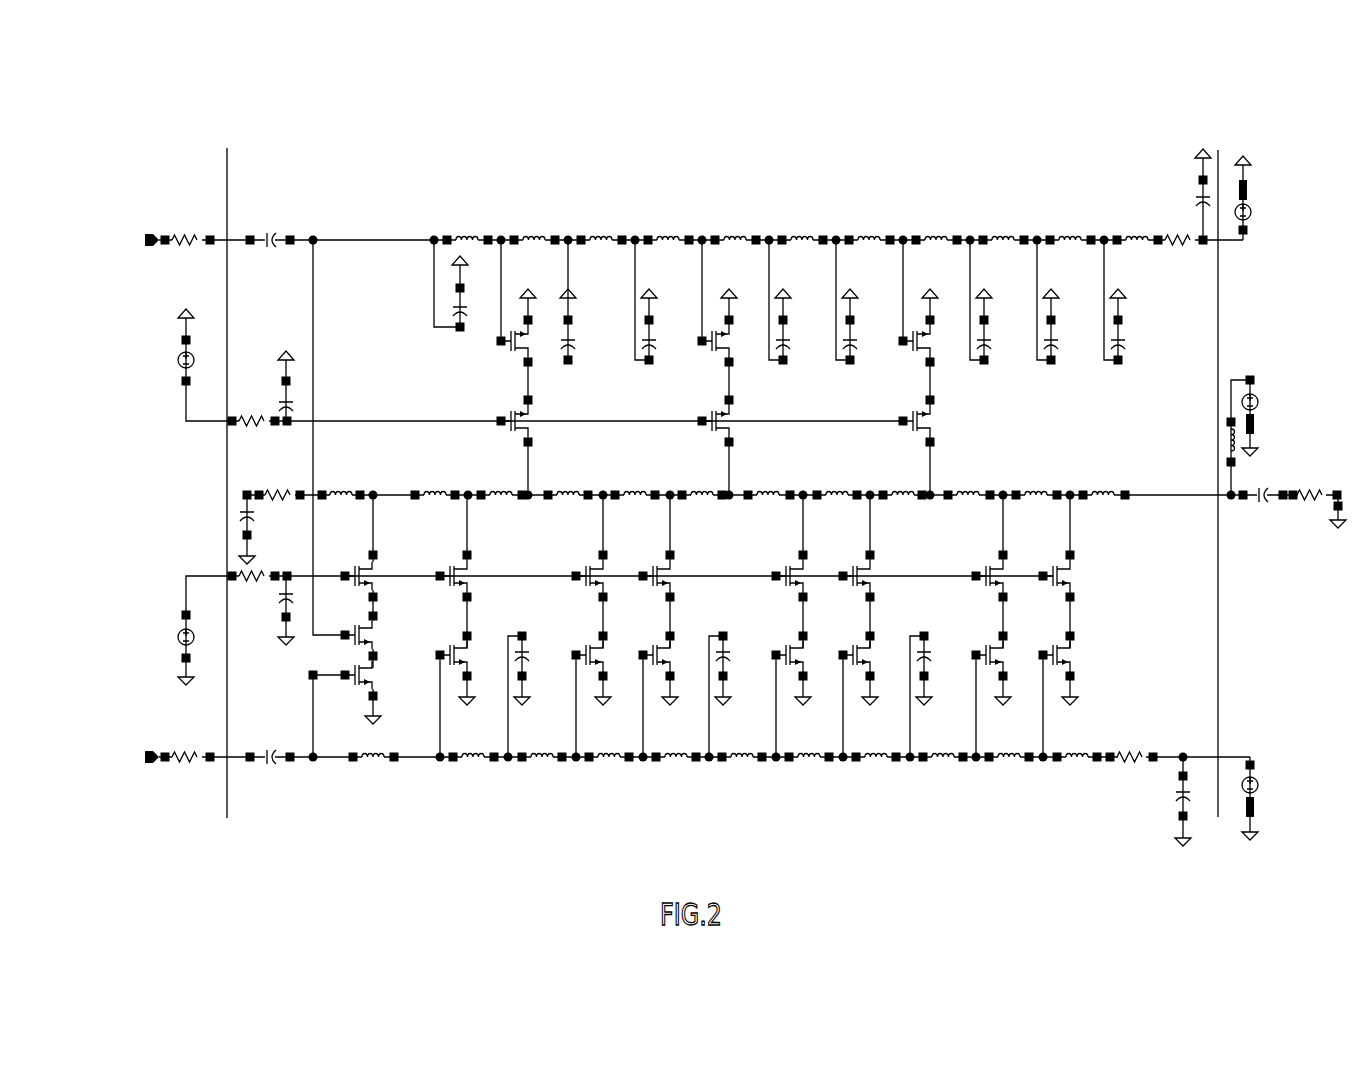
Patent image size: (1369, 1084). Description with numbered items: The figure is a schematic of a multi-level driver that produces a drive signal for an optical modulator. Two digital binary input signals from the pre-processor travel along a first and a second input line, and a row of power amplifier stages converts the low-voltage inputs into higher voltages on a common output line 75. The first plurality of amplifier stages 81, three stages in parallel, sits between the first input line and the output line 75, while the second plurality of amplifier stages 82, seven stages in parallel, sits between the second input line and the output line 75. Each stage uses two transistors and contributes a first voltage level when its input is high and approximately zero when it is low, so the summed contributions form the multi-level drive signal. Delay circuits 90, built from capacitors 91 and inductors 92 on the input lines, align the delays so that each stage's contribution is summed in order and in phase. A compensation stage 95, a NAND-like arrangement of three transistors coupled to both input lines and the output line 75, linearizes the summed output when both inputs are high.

The output line 75 is at (1187, 497).
The first plurality of amplifier stages 81 is at (489, 366).
The second plurality of amplifier stages 82 is at (93, 622).
The delay circuit 90 is at (586, 327).
The capacitor 91 is at (577, 346).
The inductor 92 is at (600, 238).
The compensation stage 95 is at (375, 534).